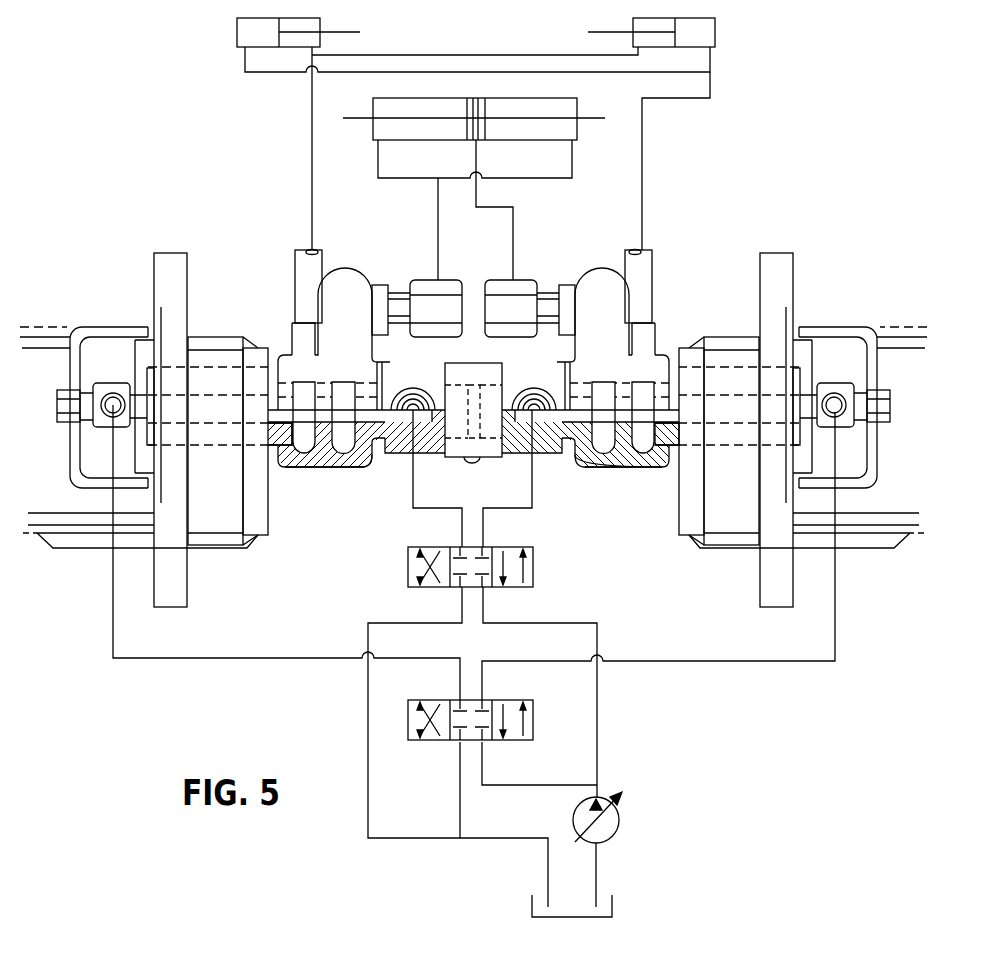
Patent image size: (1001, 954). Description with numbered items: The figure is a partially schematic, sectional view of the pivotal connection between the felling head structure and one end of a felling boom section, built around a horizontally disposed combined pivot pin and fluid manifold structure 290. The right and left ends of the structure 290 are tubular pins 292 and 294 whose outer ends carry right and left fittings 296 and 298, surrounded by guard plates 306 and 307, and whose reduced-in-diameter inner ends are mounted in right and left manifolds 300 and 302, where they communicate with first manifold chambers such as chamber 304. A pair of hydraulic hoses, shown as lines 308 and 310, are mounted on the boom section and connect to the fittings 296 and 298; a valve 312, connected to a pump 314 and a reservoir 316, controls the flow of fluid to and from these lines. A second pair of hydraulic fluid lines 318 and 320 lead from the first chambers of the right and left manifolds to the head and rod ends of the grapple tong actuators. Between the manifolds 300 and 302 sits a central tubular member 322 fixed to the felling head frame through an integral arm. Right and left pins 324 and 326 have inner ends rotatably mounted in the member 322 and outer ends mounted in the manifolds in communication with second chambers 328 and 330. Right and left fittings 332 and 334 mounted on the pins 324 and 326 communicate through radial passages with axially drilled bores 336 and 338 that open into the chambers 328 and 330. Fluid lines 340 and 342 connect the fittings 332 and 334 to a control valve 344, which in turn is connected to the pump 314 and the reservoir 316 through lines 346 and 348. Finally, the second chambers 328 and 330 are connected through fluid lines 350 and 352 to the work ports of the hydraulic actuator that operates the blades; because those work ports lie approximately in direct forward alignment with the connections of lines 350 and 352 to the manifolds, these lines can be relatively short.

The combined pivot pin and fluid manifold structure 290 is at (360, 469).
The right tubular pin 292 is at (675, 458).
The left tubular pin 294 is at (272, 455).
The right fitting 296 is at (838, 390).
The left fitting 298 is at (98, 382).
The right manifold 300 is at (597, 467).
The left manifold 302 is at (310, 468).
The first manifold chamber 304 is at (645, 455).
The guard plate 306 is at (838, 335).
The guard plate 307 is at (99, 327).
The hydraulic line 308 is at (725, 662).
The hydraulic line 310 is at (213, 658).
The valve 312 is at (512, 700).
The pump 314 is at (619, 820).
The reservoir 316 is at (613, 903).
The hydraulic fluid line 318 is at (603, 74).
The hydraulic fluid line 320 is at (312, 161).
The central tubular member 322 is at (472, 363).
The right pin 324 is at (556, 373).
The left pin 326 is at (377, 362).
The second chamber 328 is at (613, 413).
The second chamber 330 is at (337, 408).
The right fitting 332 is at (527, 392).
The left fitting 334 is at (413, 388).
The axially drilled bore 336 is at (578, 417).
The axially drilled bore 338 is at (352, 405).
The fluid line 340 is at (530, 482).
The fluid line 342 is at (415, 478).
The control valve 344 is at (533, 560).
The line 346 is at (567, 620).
The line 348 is at (392, 620).
The fluid line 350 is at (513, 242).
The fluid line 352 is at (438, 227).